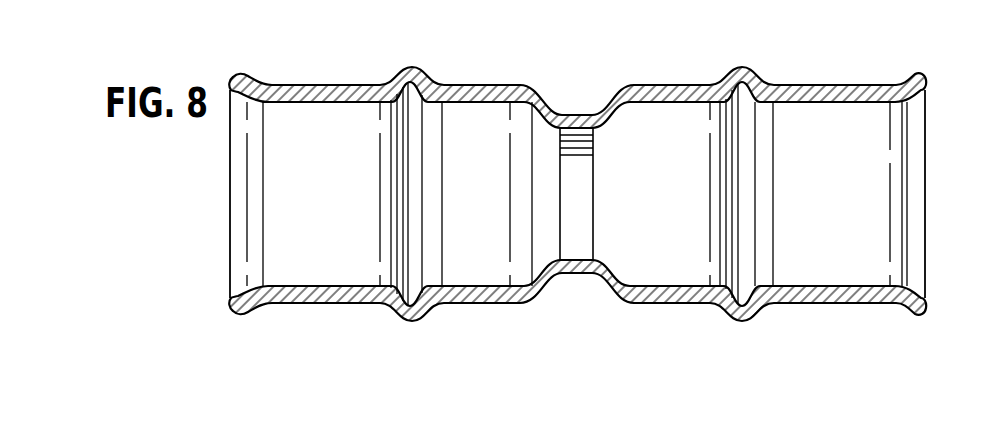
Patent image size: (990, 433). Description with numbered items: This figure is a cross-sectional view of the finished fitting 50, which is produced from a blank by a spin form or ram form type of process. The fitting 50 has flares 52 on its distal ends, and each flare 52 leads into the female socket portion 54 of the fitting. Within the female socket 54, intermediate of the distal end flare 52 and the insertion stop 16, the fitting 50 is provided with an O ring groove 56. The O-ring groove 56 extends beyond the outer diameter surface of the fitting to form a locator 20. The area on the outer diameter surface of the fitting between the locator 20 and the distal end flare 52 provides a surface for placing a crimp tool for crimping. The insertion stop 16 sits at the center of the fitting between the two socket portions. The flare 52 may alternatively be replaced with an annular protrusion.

The fitting 50 is at (311, 86).
The insertion stop 16 is at (572, 116).
The locator 20 is at (739, 72).
The O ring groove 56 is at (790, 87).
The female socket portion 54 is at (849, 103).
The flare 52 is at (912, 73).